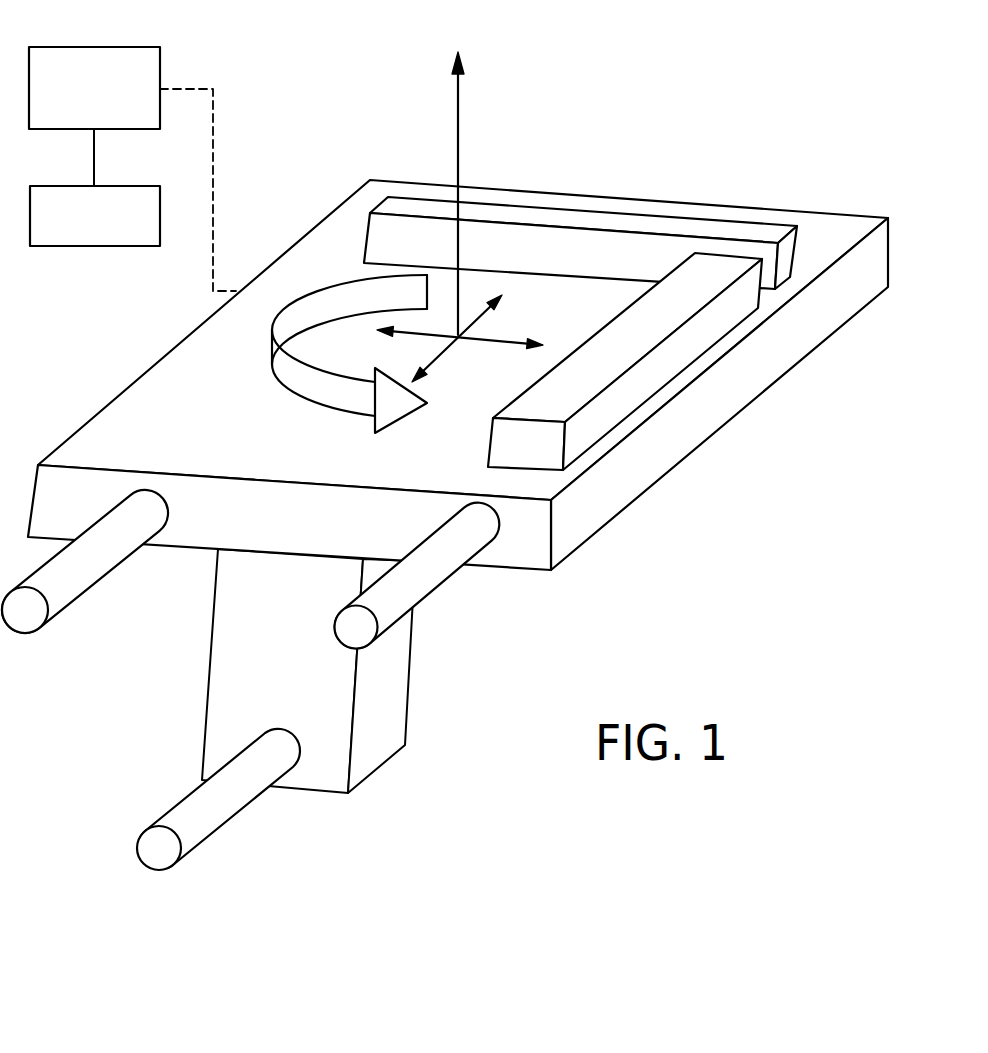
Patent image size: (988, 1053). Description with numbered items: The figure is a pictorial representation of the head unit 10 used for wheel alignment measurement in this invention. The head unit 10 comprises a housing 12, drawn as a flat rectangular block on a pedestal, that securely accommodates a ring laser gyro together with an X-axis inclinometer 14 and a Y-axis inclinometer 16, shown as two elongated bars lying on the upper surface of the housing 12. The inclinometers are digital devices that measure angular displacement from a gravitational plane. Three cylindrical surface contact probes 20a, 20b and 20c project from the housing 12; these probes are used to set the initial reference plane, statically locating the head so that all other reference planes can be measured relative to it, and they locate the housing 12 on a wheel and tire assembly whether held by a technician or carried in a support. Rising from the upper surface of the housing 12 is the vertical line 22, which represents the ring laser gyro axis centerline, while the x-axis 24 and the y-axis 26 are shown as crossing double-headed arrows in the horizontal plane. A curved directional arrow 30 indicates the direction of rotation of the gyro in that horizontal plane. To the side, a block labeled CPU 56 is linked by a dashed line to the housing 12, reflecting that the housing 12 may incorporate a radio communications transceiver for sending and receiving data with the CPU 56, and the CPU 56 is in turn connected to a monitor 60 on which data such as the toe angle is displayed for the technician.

The head unit 10 is at (445, 466).
The housing 12 is at (802, 335).
The X-axis inclinometer 14 is at (502, 213).
The Y-axis inclinometer 16 is at (488, 454).
The surface contact probe 20a is at (93, 566).
The surface contact probe 20b is at (195, 835).
The surface contact probe 20c is at (442, 573).
The ring laser gyro axis centerline 22 is at (460, 103).
The x-axis 24 is at (497, 338).
The y-axis 26 is at (440, 357).
The directional arrow 30 is at (282, 373).
The CPU 56 is at (125, 45).
The monitor 60 is at (125, 185).